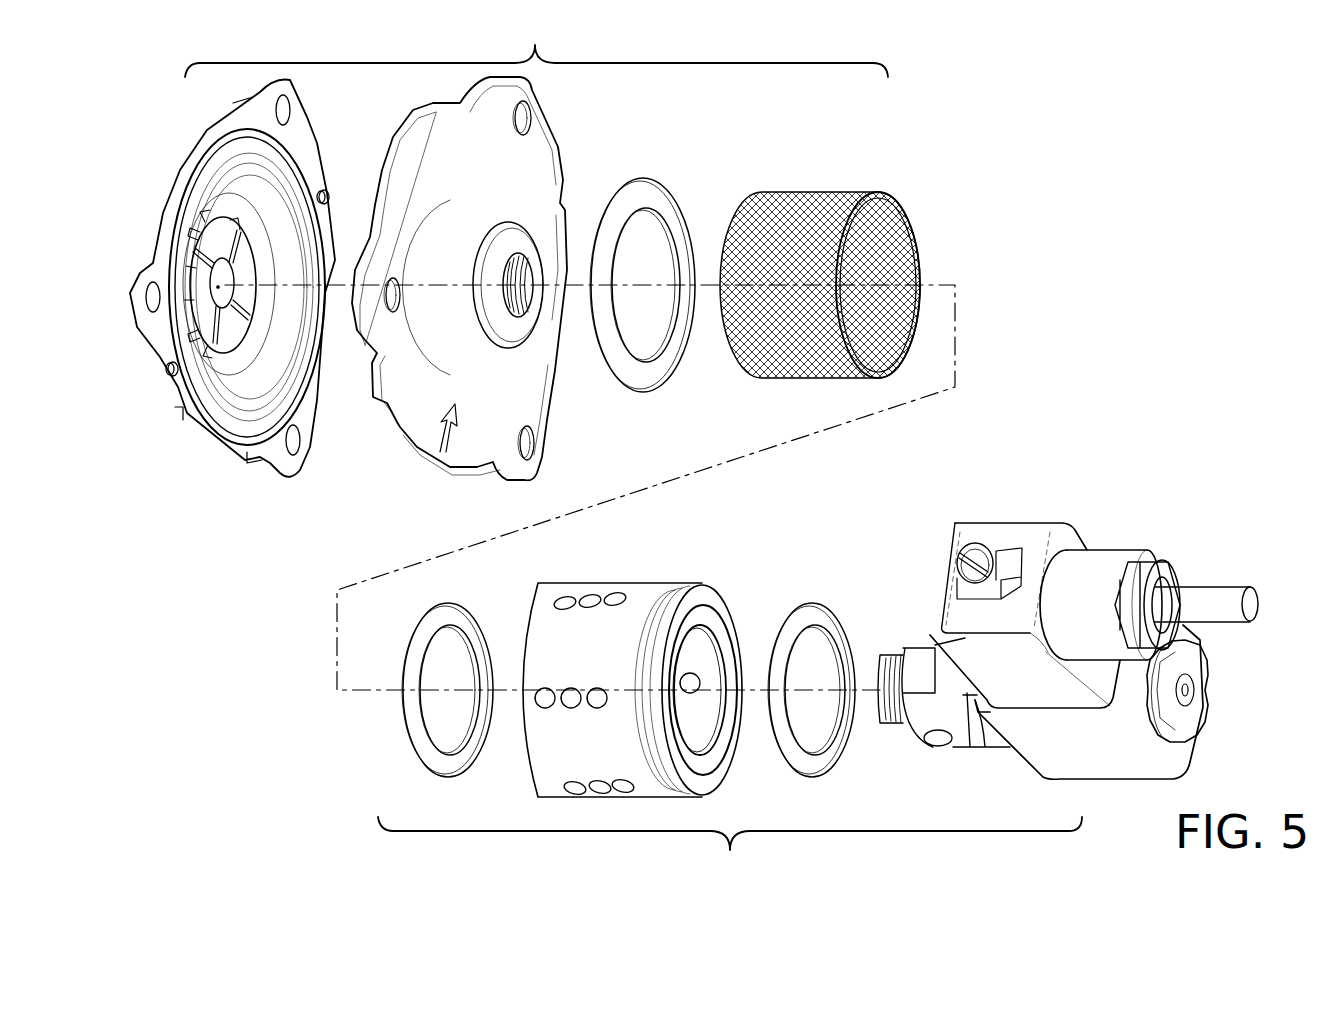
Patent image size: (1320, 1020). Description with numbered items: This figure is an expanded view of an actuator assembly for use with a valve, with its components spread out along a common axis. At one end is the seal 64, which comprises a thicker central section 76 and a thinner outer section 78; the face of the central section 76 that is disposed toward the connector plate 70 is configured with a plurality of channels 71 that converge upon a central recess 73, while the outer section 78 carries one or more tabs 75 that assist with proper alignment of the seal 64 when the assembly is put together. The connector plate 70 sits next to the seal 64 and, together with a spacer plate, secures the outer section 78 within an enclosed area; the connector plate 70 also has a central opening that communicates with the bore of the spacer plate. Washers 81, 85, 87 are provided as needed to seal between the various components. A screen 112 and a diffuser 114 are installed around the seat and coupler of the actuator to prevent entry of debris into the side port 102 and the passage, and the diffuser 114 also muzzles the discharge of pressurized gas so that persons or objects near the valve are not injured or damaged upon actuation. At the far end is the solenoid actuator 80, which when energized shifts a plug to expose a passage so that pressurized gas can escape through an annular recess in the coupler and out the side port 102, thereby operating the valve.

The seal 64 is at (300, 160).
The connector plate 70 is at (537, 160).
The channels 71 is at (243, 233).
The central recess 73 is at (230, 277).
The tabs 75 is at (175, 372).
The central section 76 is at (233, 333).
The outer section 78 is at (253, 388).
The solenoid actuator 80 is at (1028, 545).
The washer 81 is at (651, 188).
The washer 85 is at (455, 614).
The washer 87 is at (820, 614).
The side port 102 is at (932, 742).
The screen 112 is at (762, 340).
The diffuser 114 is at (550, 735).